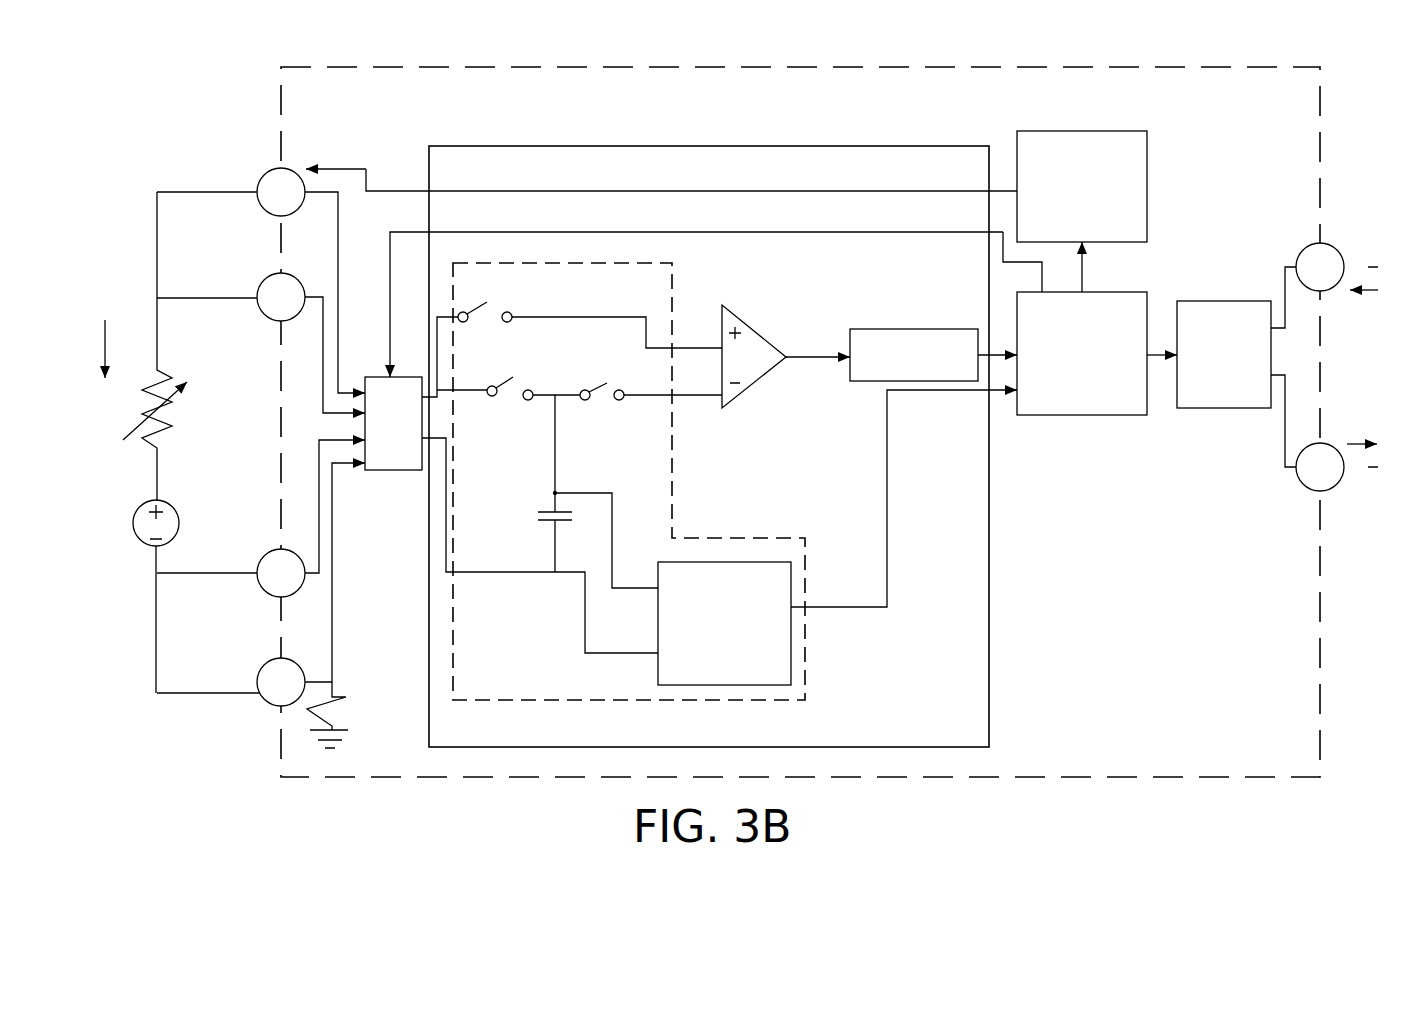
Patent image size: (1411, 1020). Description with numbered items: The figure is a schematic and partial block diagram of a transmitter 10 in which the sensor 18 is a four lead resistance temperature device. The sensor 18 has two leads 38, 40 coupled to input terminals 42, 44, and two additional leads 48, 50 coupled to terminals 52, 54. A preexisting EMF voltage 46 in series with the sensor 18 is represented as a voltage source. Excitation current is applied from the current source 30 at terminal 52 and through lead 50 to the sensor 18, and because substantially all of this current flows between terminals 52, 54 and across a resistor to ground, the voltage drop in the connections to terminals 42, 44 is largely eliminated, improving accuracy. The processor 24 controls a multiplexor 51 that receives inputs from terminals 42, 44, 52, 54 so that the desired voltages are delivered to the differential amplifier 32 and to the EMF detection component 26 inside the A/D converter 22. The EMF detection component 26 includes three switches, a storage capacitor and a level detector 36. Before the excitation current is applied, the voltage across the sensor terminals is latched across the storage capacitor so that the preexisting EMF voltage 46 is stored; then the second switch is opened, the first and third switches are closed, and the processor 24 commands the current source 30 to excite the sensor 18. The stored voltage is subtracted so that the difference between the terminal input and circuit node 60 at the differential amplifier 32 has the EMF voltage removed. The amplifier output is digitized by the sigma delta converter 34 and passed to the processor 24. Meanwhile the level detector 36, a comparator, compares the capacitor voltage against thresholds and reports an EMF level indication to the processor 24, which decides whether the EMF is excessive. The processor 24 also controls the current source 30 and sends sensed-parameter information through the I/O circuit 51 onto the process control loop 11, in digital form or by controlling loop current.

The transmitter 10 is at (800, 422).
The process control loop 11 is at (1357, 265).
The sensor 18 is at (112, 413).
The A/D converter 22 is at (708, 143).
The processor 24 is at (1097, 328).
The EMF detection component 26 is at (805, 685).
The current source 30 is at (1082, 186).
The differential amplifier 32 is at (743, 318).
The sigma delta converter 34 is at (917, 328).
The level detector 36 is at (792, 590).
The lead 38 is at (212, 295).
The lead 40 is at (193, 572).
The input terminal 42 is at (263, 280).
The input terminal 44 is at (259, 586).
The EMF voltage source 46 is at (180, 522).
The additional lead 48 is at (197, 190).
The additional lead 50 is at (200, 697).
The I/O circuit 51 is at (382, 472).
The terminal 52 is at (266, 171).
The terminal 54 is at (259, 682).
The circuit node 60 is at (553, 488).